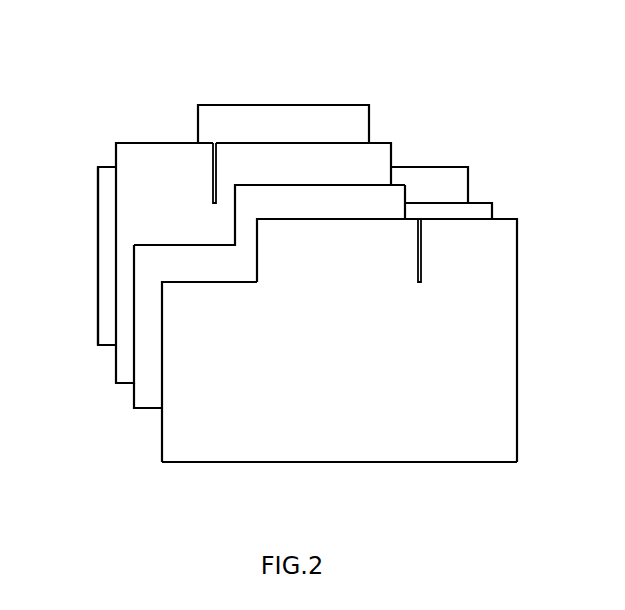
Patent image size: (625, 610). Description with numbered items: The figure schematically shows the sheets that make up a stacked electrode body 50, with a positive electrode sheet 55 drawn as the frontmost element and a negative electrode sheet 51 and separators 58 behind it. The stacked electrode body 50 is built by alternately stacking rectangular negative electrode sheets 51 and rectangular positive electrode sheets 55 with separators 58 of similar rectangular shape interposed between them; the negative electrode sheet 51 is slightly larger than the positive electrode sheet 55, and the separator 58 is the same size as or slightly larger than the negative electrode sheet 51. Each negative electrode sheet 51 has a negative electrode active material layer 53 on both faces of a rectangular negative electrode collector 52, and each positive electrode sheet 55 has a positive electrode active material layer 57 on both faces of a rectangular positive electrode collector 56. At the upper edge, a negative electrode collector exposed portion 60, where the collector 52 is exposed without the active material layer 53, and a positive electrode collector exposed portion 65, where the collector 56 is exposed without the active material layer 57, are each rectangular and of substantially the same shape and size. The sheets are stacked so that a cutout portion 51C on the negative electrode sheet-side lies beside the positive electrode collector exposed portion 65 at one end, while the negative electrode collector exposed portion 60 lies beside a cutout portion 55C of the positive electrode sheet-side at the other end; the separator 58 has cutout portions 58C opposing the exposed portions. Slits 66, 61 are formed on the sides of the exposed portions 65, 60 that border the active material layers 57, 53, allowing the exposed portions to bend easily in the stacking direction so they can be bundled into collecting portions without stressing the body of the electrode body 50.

The stacked electrode body 50 is at (407, 100).
The negative electrode sheet 51 is at (108, 323).
The cutout portion on the negative electrode sheet-side 51C is at (490, 199).
The negative electrode collector 52 is at (118, 216).
The negative electrode active material layer 53 is at (122, 370).
The positive electrode sheet 55 is at (523, 363).
The cutout portion of the positive electrode sheet-side 55C is at (182, 282).
The positive electrode collector 56 is at (518, 310).
The positive electrode active material layer 57 is at (442, 440).
The separator 58 is at (110, 186).
The cutout portion of the separator 58C is at (445, 165).
The negative electrode collector exposed portion 60 is at (136, 152).
The slit 61 is at (212, 176).
The positive electrode collector exposed portion 65 is at (505, 250).
The slit 66 is at (422, 265).